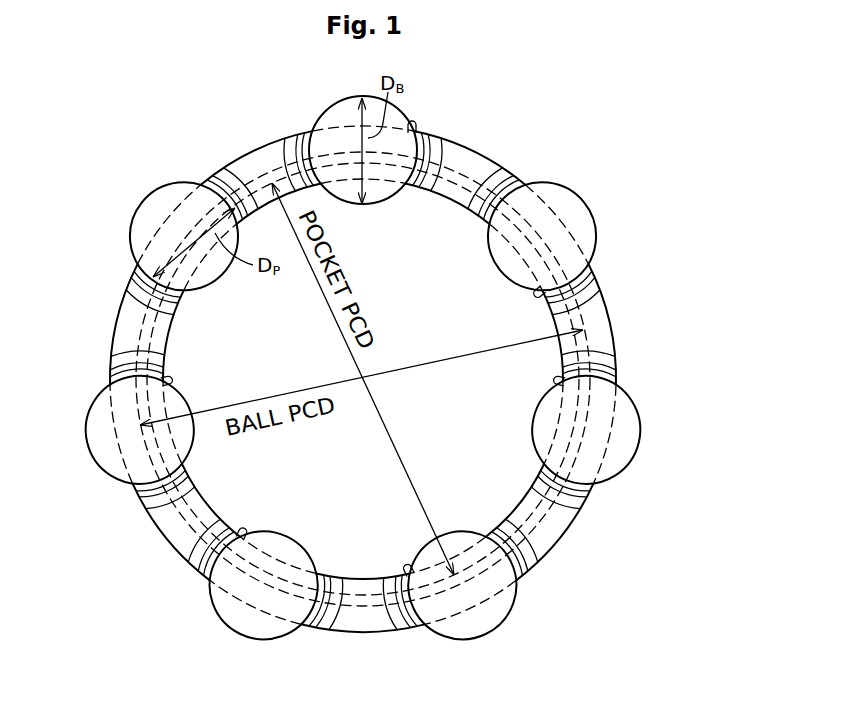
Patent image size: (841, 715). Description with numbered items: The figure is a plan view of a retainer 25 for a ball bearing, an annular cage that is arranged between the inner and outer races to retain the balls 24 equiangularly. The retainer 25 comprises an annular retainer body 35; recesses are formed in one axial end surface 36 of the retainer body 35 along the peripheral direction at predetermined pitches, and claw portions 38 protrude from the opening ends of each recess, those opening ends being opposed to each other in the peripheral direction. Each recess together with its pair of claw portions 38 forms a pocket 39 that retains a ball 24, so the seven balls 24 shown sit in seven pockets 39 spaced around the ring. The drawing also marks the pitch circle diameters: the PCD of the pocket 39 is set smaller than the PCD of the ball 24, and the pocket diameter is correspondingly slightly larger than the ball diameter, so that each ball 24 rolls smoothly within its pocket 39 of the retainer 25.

The ball 24 is at (332, 105).
The retainer 25 is at (483, 138).
The retainer body 35 is at (613, 293).
The axial end surface 36 is at (553, 532).
The claw portion 38 is at (290, 143).
The pocket 39 is at (410, 124).